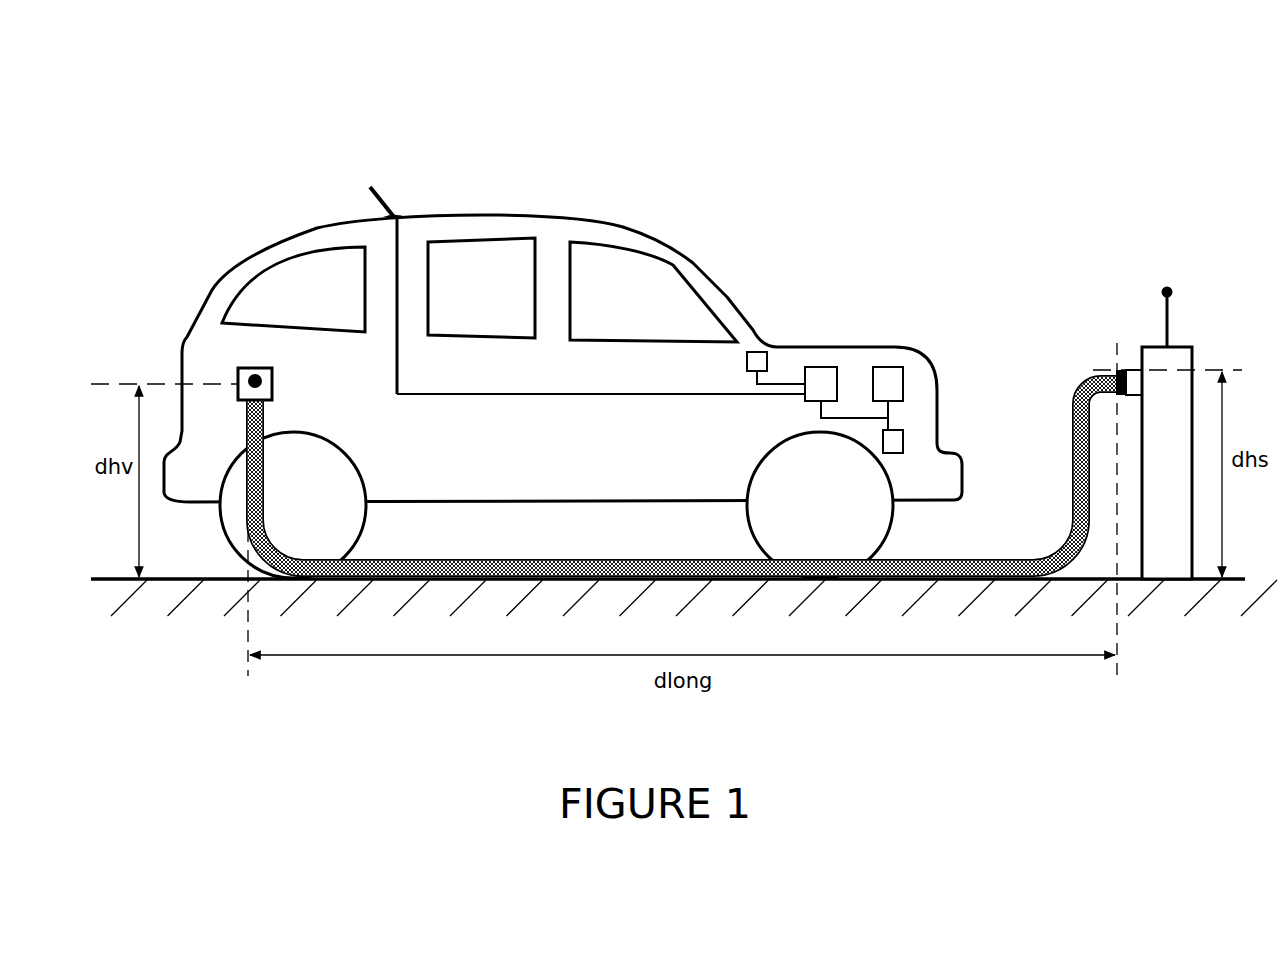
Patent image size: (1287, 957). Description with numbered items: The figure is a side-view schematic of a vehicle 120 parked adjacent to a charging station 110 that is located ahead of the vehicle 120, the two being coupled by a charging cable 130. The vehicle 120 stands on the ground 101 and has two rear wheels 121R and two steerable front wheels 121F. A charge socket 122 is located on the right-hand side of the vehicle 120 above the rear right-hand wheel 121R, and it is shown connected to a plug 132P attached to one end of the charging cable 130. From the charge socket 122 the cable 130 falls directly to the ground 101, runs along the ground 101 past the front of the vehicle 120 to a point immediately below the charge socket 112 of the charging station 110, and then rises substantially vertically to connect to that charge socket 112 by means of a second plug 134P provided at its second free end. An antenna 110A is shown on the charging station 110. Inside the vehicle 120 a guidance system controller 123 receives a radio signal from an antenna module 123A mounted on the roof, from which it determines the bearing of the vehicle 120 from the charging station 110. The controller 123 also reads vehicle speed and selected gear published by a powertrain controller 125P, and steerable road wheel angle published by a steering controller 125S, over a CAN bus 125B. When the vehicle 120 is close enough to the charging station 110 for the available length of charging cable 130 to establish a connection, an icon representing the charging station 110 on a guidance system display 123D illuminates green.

The ground 101 is at (110, 577).
The charging station 110 is at (1216, 317).
The charging station antenna 110A is at (1170, 306).
The charge socket 112 is at (1133, 380).
The vehicle 120 is at (752, 222).
The rear wheels 121R is at (282, 489).
The front wheels 121F is at (846, 489).
The charge socket 122 is at (249, 379).
The guidance system controller 123 is at (821, 366).
The antenna module 123A is at (383, 196).
The guidance system display 123D is at (758, 351).
The CAN bus 125B is at (853, 418).
The powertrain controller 125P is at (904, 375).
The steering controller 125S is at (904, 442).
The charging cable 130 is at (992, 562).
The plug 132P is at (253, 376).
The second plug 134P is at (1117, 370).